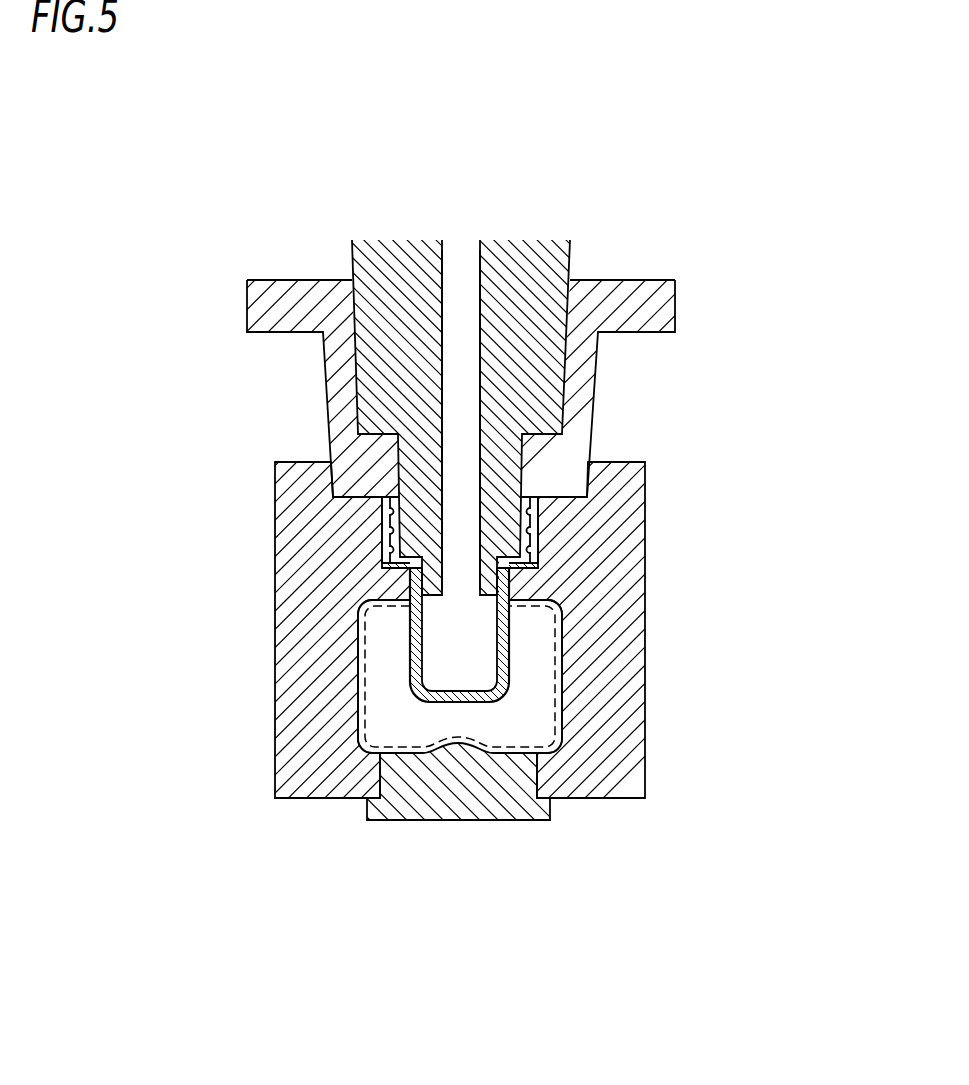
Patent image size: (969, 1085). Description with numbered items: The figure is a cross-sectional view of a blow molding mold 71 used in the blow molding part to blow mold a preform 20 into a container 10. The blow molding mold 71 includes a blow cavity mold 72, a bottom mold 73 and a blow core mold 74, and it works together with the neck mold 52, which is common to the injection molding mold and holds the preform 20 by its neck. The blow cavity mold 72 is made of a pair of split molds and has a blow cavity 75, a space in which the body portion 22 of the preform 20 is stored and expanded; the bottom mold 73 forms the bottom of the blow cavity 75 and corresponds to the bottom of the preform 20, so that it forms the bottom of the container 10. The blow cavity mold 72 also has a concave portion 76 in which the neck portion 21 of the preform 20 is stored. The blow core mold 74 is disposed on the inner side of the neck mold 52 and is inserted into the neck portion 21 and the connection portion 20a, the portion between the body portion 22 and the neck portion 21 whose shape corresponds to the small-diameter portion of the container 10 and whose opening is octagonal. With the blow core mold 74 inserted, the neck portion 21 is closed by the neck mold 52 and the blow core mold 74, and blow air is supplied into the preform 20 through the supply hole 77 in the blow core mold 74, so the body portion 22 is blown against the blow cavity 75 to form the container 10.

The blow molding mold 71 is at (738, 127).
The neck mold 52 is at (345, 448).
The blow core mold 74 is at (427, 478).
The concave portion 76 is at (530, 515).
The supply hole 77 is at (460, 398).
The blow cavity mold 72 is at (620, 660).
The blow cavity 75 is at (385, 690).
The bottom mold 73 is at (446, 806).
The container 10 is at (352, 724).
The preform 20 is at (520, 690).
The connection portion 20a is at (397, 563).
The neck portion 21 is at (387, 527).
The body portion 22 is at (413, 637).